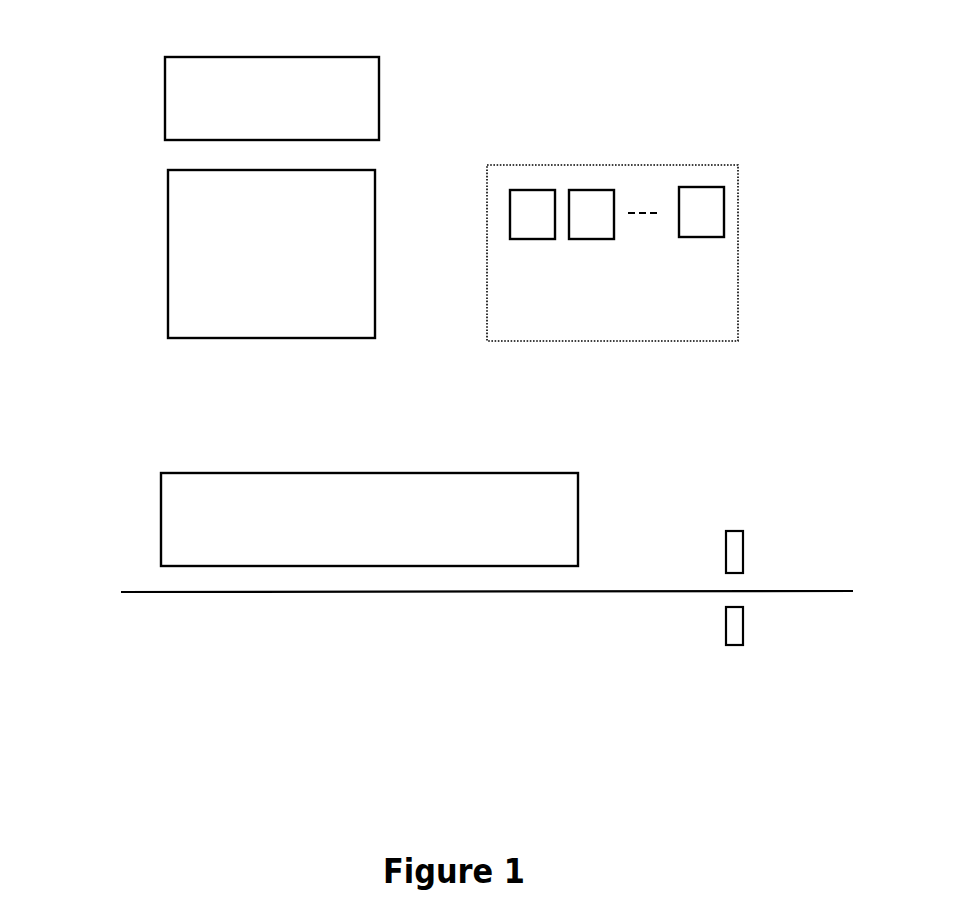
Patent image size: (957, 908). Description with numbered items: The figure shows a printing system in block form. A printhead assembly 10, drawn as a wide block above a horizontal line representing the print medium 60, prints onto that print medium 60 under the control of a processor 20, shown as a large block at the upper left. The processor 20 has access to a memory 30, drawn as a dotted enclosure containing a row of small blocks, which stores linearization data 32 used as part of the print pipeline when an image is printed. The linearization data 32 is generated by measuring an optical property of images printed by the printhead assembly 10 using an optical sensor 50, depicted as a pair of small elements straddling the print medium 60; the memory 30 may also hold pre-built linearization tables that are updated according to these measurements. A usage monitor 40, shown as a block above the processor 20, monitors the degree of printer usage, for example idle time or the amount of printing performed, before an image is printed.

The printhead assembly 10 is at (410, 490).
The processor 20 is at (210, 251).
The memory 30 is at (649, 225).
The linearization data 32 is at (709, 217).
The usage monitor 40 is at (365, 83).
The optical sensor 50 is at (750, 553).
The print medium 60 is at (262, 592).